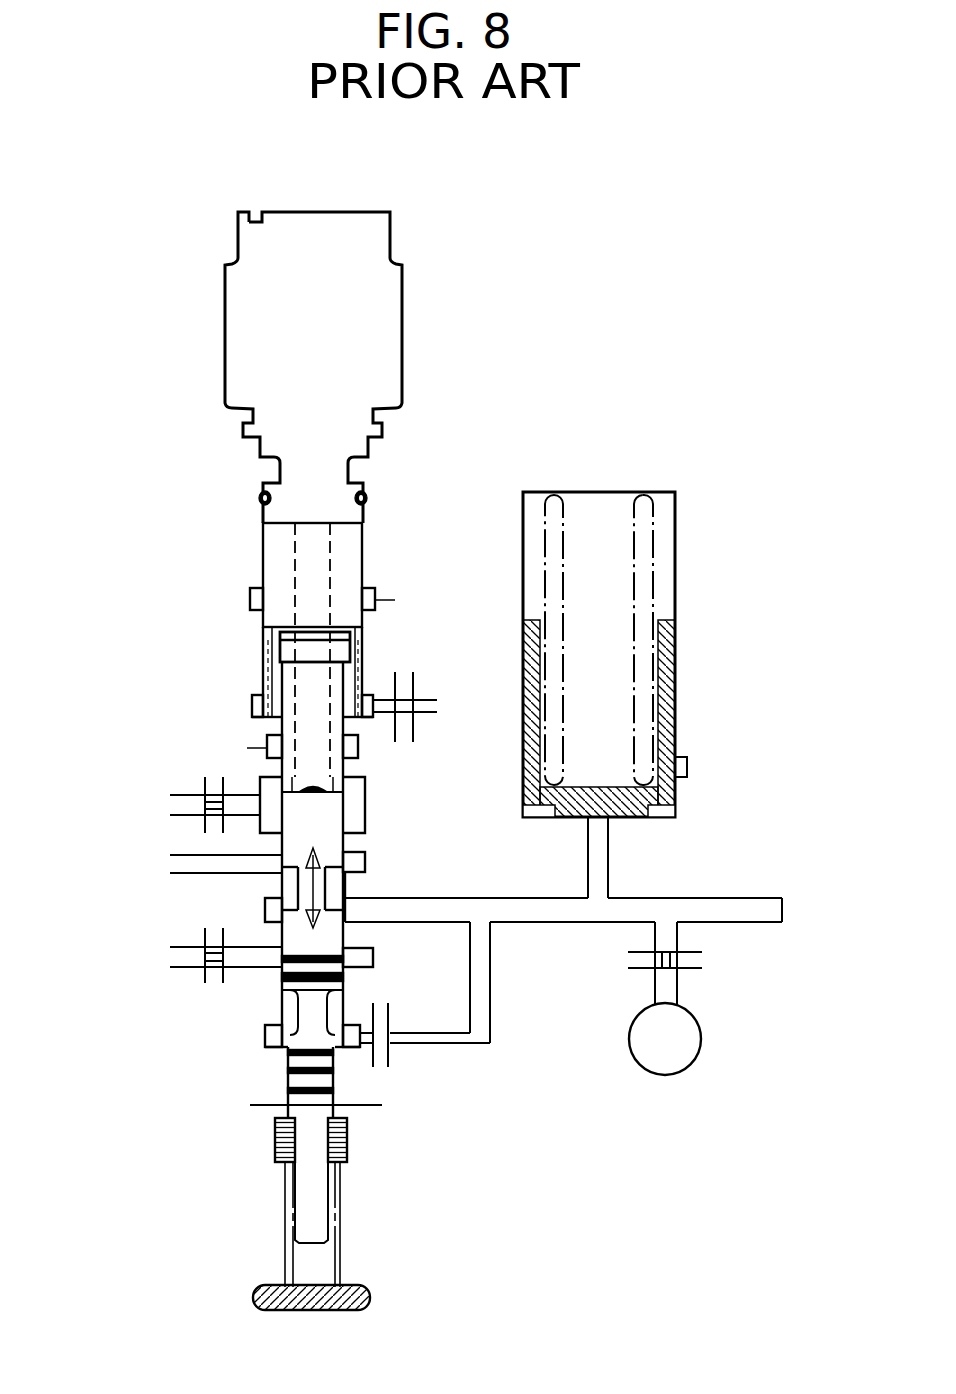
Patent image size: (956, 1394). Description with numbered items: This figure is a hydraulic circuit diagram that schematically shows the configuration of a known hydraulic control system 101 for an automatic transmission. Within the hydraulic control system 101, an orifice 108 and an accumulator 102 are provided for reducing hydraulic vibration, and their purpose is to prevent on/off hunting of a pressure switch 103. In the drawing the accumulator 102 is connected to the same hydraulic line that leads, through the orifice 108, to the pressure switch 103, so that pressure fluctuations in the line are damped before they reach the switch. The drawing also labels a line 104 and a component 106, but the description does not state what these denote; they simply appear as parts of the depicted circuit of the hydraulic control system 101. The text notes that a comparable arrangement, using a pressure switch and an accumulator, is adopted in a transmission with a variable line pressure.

The hydraulic control system 101 is at (599, 180).
The accumulator 102 is at (600, 492).
The pressure switch 103 is at (702, 1037).
The pipe line 104 is at (538, 922).
The chamber / upper body 106 is at (225, 323).
The orifice 108 is at (693, 950).